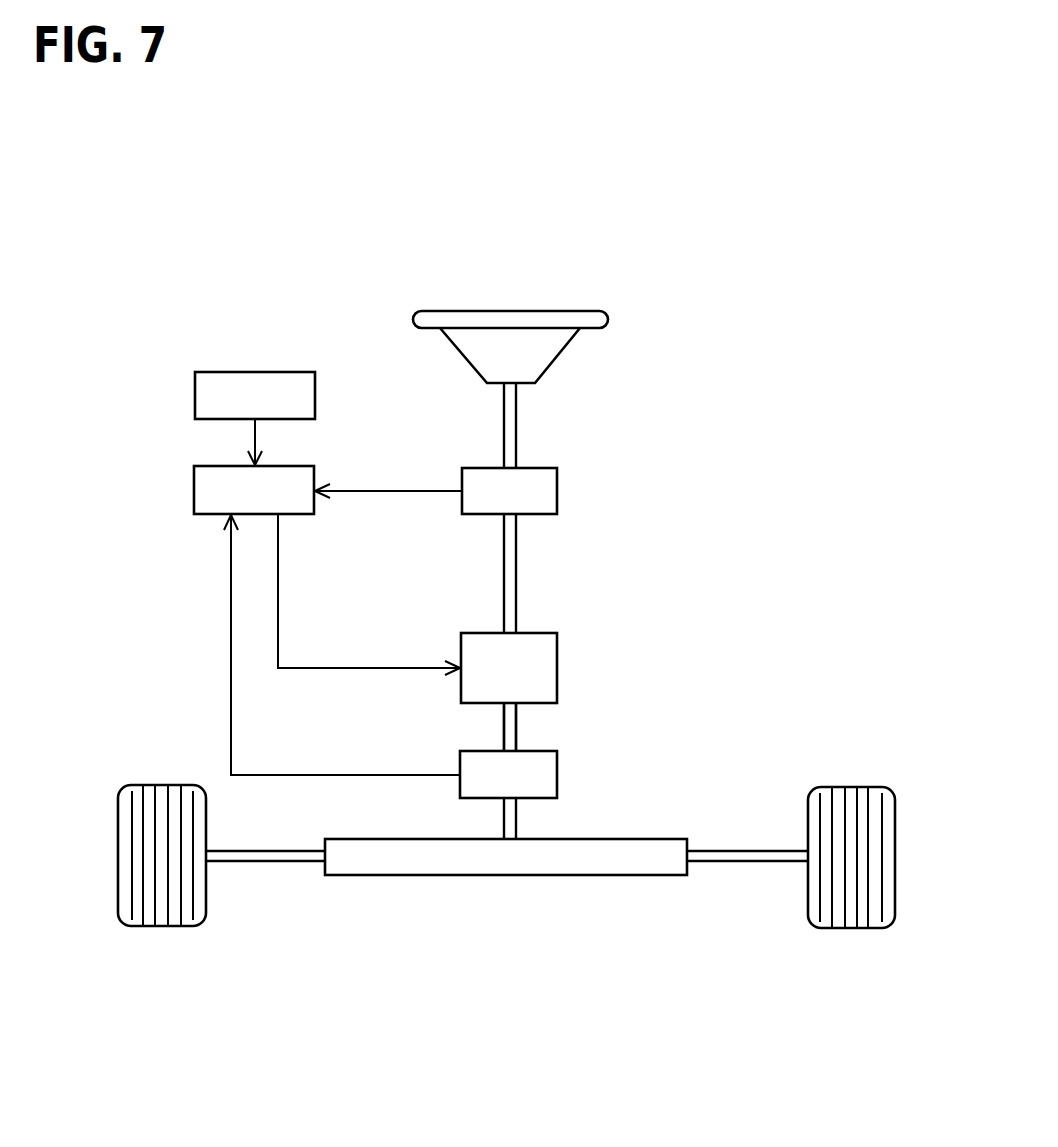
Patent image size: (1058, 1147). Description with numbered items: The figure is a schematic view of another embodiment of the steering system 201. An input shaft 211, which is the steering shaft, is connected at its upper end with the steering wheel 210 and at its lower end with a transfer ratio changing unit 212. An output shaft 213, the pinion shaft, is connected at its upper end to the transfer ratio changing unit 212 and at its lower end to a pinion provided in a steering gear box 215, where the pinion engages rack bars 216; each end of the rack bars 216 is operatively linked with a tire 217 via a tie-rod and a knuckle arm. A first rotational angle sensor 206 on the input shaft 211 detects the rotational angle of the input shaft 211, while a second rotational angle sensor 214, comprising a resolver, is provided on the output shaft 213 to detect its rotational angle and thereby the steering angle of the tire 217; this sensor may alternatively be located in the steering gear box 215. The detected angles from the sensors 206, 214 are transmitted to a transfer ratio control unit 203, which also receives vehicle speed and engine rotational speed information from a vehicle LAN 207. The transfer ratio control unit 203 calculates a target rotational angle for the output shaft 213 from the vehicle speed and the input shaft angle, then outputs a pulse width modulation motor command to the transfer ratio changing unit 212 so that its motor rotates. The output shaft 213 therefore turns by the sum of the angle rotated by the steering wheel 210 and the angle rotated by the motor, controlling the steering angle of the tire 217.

The steering system 201 is at (578, 224).
The transfer ratio control unit 203 is at (212, 465).
The first rotational angle sensor 206 is at (558, 489).
The vehicle LAN 207 is at (212, 371).
The steering wheel 210 is at (582, 313).
The input shaft 211 is at (517, 576).
The transfer ratio changing unit 212 is at (558, 666).
The output shaft 213 is at (517, 728).
The second rotational angle sensor 214 is at (558, 774).
The steering gear box 215 is at (457, 876).
The rack bars 216 is at (277, 863).
The tire 217 is at (180, 785).